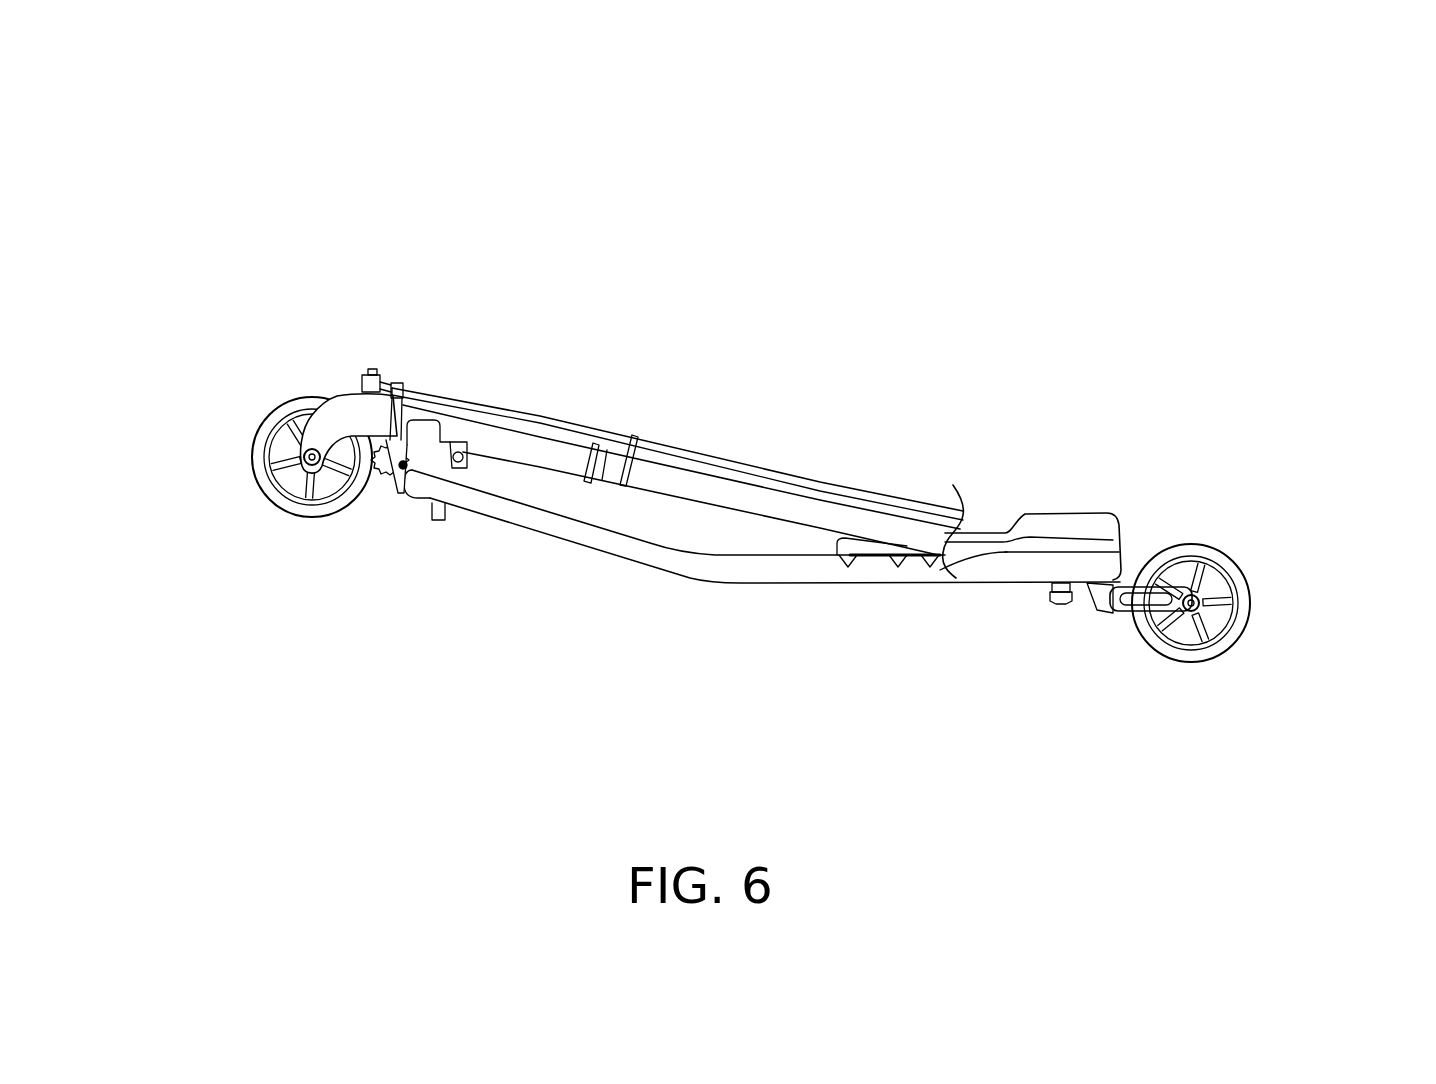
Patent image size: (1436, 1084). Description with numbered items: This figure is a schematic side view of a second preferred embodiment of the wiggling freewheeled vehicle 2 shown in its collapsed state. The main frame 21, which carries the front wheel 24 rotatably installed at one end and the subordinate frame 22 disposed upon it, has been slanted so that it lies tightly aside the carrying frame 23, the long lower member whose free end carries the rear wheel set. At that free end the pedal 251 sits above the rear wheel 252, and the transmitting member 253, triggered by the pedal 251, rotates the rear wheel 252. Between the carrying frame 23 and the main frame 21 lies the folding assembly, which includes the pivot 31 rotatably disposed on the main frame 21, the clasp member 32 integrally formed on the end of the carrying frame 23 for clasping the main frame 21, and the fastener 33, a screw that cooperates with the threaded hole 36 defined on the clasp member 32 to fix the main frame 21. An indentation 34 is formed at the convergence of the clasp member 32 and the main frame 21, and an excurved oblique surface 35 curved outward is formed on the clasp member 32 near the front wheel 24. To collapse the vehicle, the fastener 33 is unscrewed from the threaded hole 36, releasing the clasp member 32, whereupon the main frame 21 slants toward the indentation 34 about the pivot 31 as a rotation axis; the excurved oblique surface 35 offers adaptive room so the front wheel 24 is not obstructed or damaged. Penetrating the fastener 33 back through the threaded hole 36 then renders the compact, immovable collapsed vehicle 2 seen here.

The wiggling freewheeled vehicle 2 is at (220, 188).
The main frame 21 is at (557, 433).
The subordinate frame 22 is at (738, 480).
The carrying frame 23 is at (698, 583).
The front wheel 24 is at (257, 432).
The pivot 31 is at (463, 446).
The clasp member 32 is at (404, 492).
The fastener 33 is at (388, 440).
The indentation 34 is at (457, 445).
The excurved oblique surface 35 is at (397, 487).
The threaded hole 36 is at (437, 425).
The pedal 251 is at (1068, 511).
The rear wheel 252 is at (1230, 554).
The transmitting member 253 is at (1097, 603).